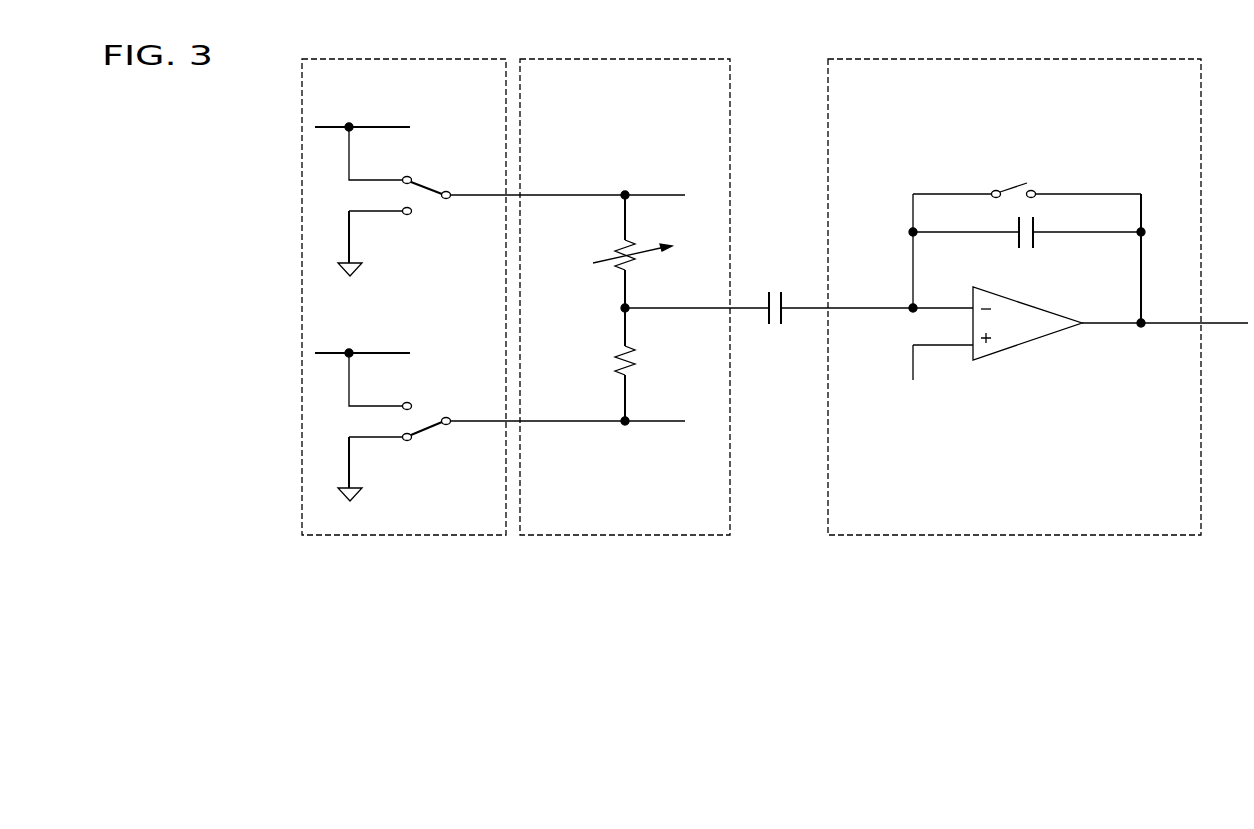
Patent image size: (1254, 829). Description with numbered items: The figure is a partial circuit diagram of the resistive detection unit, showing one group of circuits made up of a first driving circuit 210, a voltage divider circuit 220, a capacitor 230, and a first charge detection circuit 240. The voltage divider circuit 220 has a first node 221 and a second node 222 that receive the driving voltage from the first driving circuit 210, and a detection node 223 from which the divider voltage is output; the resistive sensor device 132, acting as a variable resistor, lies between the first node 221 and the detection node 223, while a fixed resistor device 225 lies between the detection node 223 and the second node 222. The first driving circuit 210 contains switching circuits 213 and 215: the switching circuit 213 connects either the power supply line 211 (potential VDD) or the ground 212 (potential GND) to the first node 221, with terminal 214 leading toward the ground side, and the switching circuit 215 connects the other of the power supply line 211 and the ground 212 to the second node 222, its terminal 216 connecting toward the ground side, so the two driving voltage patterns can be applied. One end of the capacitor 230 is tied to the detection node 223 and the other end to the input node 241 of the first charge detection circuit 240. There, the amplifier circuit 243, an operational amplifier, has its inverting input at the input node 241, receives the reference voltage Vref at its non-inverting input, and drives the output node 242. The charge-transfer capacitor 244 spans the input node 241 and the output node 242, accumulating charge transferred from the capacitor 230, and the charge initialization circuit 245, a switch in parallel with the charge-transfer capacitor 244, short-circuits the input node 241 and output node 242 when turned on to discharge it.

The first driving circuit 210 is at (370, 59).
The voltage divider circuit 220 is at (594, 59).
The first charge detection circuit 240 is at (917, 59).
The power supply line 211 is at (412, 126).
The ground 212 is at (352, 257).
The switching circuit 213 is at (440, 163).
The switch terminal 214 is at (408, 215).
The switching circuit 215 is at (437, 407).
The switch terminal 216 is at (408, 441).
The first node 221 is at (623, 193).
The second node 222 is at (628, 426).
The detection node 223 is at (633, 308).
The resistive sensor device 132 is at (610, 250).
The resistor device 225 is at (610, 358).
The capacitor 230 is at (780, 291).
The input node 241 is at (910, 306).
The output node 242 is at (1141, 325).
The amplifier circuit 243 is at (1025, 343).
The charge-transfer capacitor 244 is at (1036, 243).
The charge initialization circuit 245 is at (1017, 184).